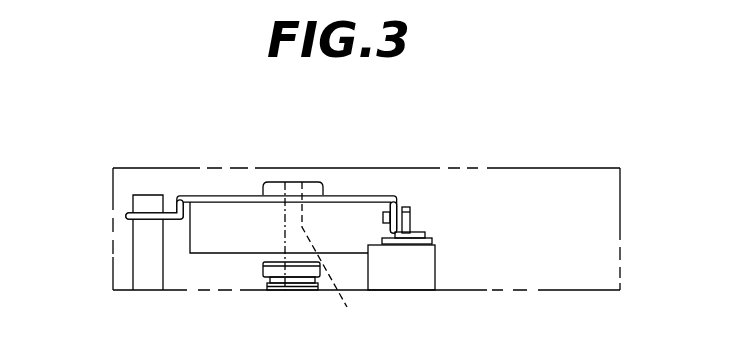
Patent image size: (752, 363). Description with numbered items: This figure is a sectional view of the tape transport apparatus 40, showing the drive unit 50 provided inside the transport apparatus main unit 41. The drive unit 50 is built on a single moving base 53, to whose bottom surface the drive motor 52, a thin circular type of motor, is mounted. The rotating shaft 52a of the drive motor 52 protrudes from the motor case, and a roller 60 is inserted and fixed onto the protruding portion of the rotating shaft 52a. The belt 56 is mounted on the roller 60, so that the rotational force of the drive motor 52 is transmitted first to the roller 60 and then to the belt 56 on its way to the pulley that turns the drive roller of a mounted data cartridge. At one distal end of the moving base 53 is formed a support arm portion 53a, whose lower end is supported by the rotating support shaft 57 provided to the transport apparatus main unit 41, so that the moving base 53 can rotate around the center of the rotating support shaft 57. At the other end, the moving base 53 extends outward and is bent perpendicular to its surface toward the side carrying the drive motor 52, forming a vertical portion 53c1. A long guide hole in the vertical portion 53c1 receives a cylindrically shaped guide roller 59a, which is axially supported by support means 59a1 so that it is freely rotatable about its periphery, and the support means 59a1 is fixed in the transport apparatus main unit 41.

The tape transport apparatus 40 is at (555, 122).
The transport apparatus main unit 41 is at (577, 170).
The drive unit 50 is at (278, 174).
The drive motor 52 is at (208, 242).
The rotating shaft 52a is at (343, 265).
The moving base 53 is at (207, 193).
The support arm portion 53a is at (140, 207).
The vertical portion 53c1 is at (400, 194).
The belt 56 is at (265, 268).
The rotating support shaft 57 is at (143, 262).
The guide roller 59a is at (410, 218).
The support means 59a1 is at (443, 281).
The roller 60 is at (294, 290).